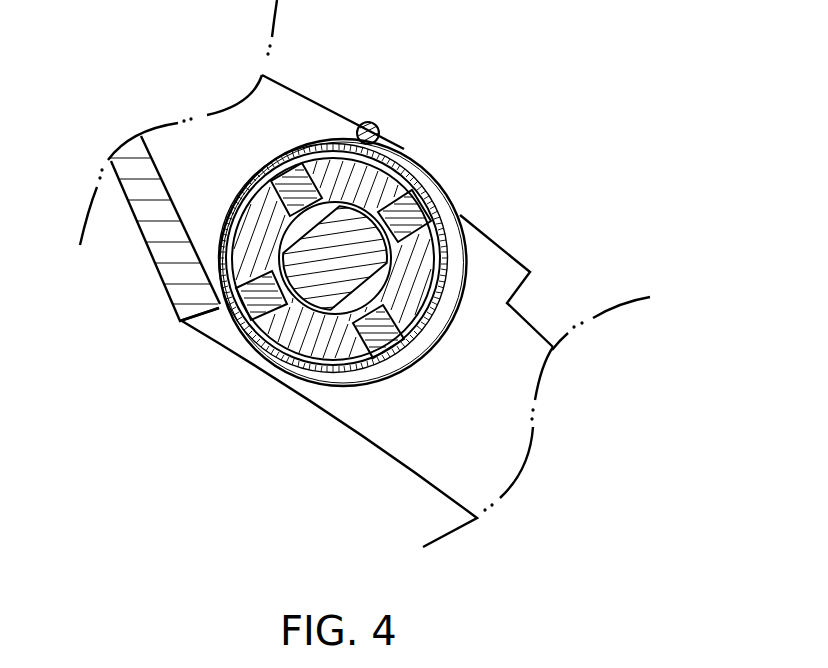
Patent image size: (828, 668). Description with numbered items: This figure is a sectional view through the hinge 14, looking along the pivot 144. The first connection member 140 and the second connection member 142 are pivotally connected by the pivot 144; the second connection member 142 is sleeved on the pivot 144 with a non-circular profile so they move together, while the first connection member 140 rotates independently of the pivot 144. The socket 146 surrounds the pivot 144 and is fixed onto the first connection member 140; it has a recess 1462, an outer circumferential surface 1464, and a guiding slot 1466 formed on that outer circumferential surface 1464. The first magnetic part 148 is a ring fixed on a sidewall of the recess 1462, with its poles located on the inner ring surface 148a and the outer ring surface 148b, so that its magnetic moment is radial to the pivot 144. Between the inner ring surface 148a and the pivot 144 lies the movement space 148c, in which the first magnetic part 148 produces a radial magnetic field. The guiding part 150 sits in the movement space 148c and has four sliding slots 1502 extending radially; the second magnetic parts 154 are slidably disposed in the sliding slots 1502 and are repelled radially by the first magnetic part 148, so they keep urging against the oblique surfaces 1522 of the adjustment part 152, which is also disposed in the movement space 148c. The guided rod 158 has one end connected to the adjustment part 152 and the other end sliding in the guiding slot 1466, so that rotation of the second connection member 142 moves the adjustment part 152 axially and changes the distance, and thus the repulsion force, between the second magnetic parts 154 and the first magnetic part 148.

The hinge 14 is at (552, 73).
The first connection member 140 is at (273, 102).
The second connection member 142 is at (433, 460).
The pivot 144 is at (350, 223).
The socket 146 is at (293, 340).
The recess 1462 is at (360, 365).
The outer circumferential surface 1464 is at (315, 372).
The guiding slot 1466 is at (245, 180).
The first magnetic part 148 is at (432, 212).
The inner ring surface 148a is at (385, 205).
The outer ring surface 148b is at (447, 238).
The movement space 148c is at (447, 276).
The guiding part 150 is at (240, 277).
The sliding slots 1502 is at (240, 322).
The adjustment part 152 is at (220, 237).
The oblique surfaces 1522 is at (258, 305).
The second magnetic parts 154 is at (278, 318).
The guided rod 158 is at (377, 123).